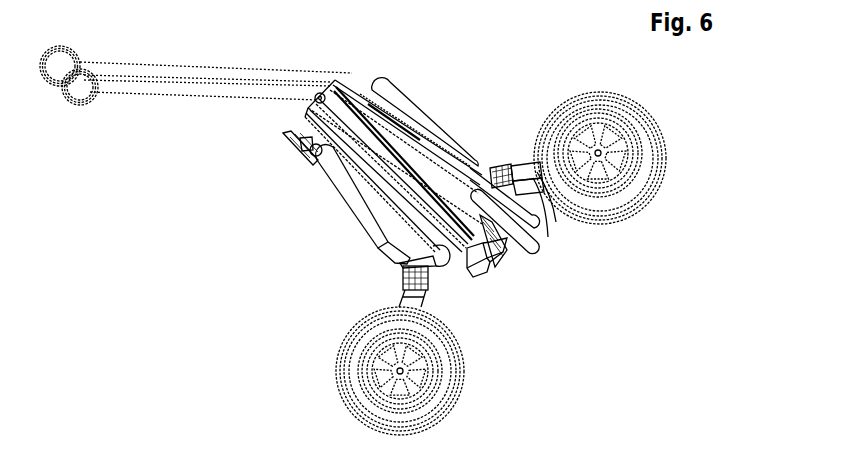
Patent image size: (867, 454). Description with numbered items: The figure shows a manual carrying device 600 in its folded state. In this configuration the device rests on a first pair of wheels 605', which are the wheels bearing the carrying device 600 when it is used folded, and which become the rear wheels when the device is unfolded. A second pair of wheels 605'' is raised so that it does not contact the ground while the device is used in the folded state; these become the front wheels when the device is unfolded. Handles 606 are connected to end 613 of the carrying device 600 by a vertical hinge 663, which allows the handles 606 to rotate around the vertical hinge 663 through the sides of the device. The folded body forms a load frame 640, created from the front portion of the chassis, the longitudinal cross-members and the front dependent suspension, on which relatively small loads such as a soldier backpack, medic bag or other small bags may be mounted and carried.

The carrying device 600 is at (692, 100).
The handles 606 is at (221, 72).
The load frame 640 is at (468, 115).
The end 613 is at (540, 249).
The vertical hinge 663 is at (548, 237).
The first pair of wheels 605' is at (438, 371).
The second pair of wheels 605'' is at (630, 163).